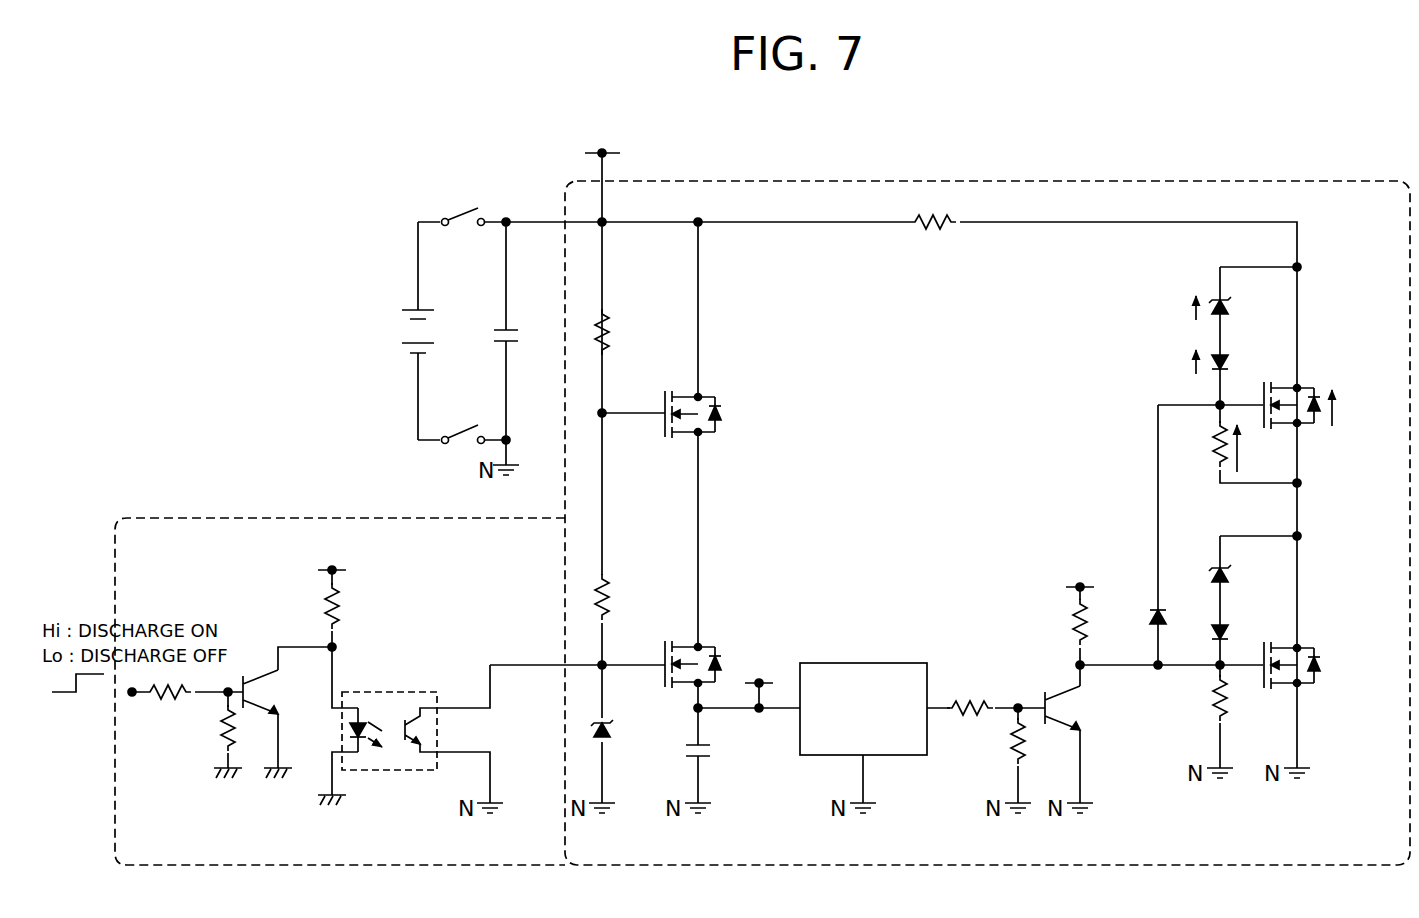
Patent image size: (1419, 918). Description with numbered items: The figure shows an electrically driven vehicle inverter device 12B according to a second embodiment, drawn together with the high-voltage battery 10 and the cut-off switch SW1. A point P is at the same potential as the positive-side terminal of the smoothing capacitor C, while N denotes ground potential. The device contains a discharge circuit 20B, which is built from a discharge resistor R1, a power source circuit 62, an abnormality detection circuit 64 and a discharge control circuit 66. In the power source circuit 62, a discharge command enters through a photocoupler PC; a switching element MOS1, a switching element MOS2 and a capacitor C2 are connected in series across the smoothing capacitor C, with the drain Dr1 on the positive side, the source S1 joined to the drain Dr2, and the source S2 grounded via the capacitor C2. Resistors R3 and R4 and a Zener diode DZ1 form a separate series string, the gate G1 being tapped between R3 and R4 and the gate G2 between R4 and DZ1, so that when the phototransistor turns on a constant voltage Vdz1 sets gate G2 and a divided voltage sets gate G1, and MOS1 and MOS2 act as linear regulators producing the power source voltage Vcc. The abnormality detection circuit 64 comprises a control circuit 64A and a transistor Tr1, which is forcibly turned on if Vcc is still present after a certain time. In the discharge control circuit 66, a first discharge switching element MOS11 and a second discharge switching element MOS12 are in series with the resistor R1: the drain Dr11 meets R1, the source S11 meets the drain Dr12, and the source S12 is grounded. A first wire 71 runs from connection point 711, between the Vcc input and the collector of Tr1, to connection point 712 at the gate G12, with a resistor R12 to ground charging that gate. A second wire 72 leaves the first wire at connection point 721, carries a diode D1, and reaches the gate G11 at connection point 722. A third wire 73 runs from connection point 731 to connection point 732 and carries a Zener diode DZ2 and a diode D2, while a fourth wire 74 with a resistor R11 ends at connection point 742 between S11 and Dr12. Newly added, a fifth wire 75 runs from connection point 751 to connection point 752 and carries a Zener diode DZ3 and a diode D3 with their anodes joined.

The electrically driven vehicle inverter device 12B is at (208, 156).
The discharge circuit 20B is at (1278, 180).
The high-voltage battery 10 is at (400, 328).
The cut-off switch SW1 is at (450, 198).
The smoothing capacitor C is at (516, 343).
The point P is at (602, 168).
The discharge resistor R1 is at (933, 238).
The resistor R3 is at (619, 332).
The resistor R4 is at (619, 597).
The switching element MOS1 is at (719, 434).
The gate of switching element MOS1 G1 is at (663, 408).
The drain of switching element MOS1 Dr1 is at (700, 395).
The source of switching element MOS1 S1 is at (700, 436).
The switching element MOS2 is at (663, 667).
The gate of switching element MOS2 G2 is at (663, 660).
The drain of switching element MOS2 Dr2 is at (700, 645).
The source of switching element MOS2 S2 is at (696, 686).
The Zener diode DZ1 is at (628, 735).
The capacitor C2 is at (715, 771).
The constant voltage Vdz1 is at (600, 668).
The power source voltage Vcc is at (759, 683).
The power source circuit 62 is at (740, 548).
The abnormality detection circuit 64 is at (983, 630).
The control circuit 64A is at (870, 663).
The discharge control circuit 66 is at (1082, 540).
The transistor Tr1 is at (1020, 734).
The connection point 711 is at (1077, 663).
The first wire 71 is at (1120, 663).
The connection point 721 is at (1156, 668).
The connection point 751 is at (1218, 668).
The second wire 72 is at (1158, 535).
The diode D1 is at (1178, 618).
The third wire 73 is at (1259, 319).
The connection point 732 is at (1299, 265).
The connection point 731 is at (1217, 402).
The Zener diode DZ2 is at (1243, 294).
The diode D2 is at (1237, 349).
The fourth wire 74 is at (1271, 460).
The resistor R11 is at (1196, 444).
The connection point 742 is at (1300, 484).
The first discharge switching element MOS11 is at (1313, 390).
The connection point 722 is at (1266, 400).
The drain of first discharge switching element MOS11 Dr11 is at (1294, 386).
The source of first discharge switching element MOS11 S11 is at (1300, 425).
The gate of first discharge switching element MOS11 G11 is at (1268, 418).
The fifth wire 75 is at (1295, 581).
The connection point 752 is at (1300, 537).
The Zener diode DZ3 is at (1247, 577).
The diode D3 is at (1241, 634).
The resistor R12 is at (1192, 716).
The second discharge switching element MOS12 is at (1313, 664).
The drain of second discharge switching element MOS12 Dr12 is at (1294, 646).
The connection point 712 is at (1265, 678).
The source of second discharge switching element MOS12 S12 is at (1300, 685).
The gate of second discharge switching element MOS12 G12 is at (1268, 678).
The photocoupler PC is at (385, 694).